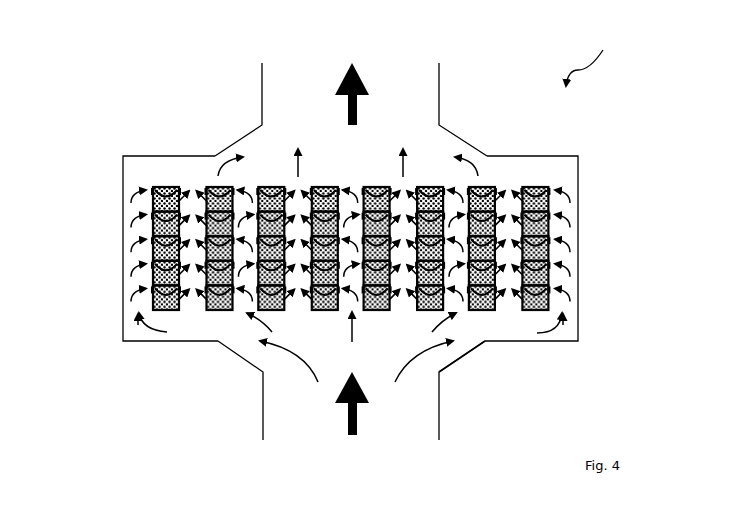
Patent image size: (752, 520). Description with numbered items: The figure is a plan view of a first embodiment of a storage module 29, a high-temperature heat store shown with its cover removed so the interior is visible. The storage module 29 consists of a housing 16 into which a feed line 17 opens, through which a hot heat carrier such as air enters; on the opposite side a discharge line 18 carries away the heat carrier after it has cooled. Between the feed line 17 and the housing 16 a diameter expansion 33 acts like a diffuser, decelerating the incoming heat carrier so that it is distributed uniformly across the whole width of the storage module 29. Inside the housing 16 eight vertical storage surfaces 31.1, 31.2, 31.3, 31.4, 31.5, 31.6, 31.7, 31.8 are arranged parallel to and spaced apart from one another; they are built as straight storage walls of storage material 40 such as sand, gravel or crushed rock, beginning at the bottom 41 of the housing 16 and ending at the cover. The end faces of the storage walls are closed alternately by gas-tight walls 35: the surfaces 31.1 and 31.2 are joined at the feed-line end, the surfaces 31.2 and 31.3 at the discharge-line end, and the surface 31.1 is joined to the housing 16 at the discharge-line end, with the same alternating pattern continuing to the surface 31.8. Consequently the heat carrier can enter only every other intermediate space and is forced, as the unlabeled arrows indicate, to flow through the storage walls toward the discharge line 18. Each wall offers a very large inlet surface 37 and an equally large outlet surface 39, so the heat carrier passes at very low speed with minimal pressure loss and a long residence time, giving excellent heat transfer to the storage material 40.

The housing 16 is at (522, 156).
The feed line 17 is at (439, 388).
The discharge line 18 is at (439, 80).
The storage module 29 is at (590, 60).
The storage surface 31.1 is at (162, 190).
The storage surface 31.2 is at (215, 190).
The storage surface 31.3 is at (266, 187).
The storage surface 31.4 is at (325, 187).
The storage surface 31.5 is at (376, 187).
The storage surface 31.6 is at (430, 187).
The storage surface 31.7 is at (487, 187).
The storage surface 31.8 is at (540, 187).
The diameter expansion 33 is at (463, 358).
The gas-tight wall 35 is at (130, 188).
The inlet surface 37 is at (234, 313).
The outlet surface 39 is at (192, 205).
The storage material 40 is at (213, 228).
The bottom 41 is at (323, 338).